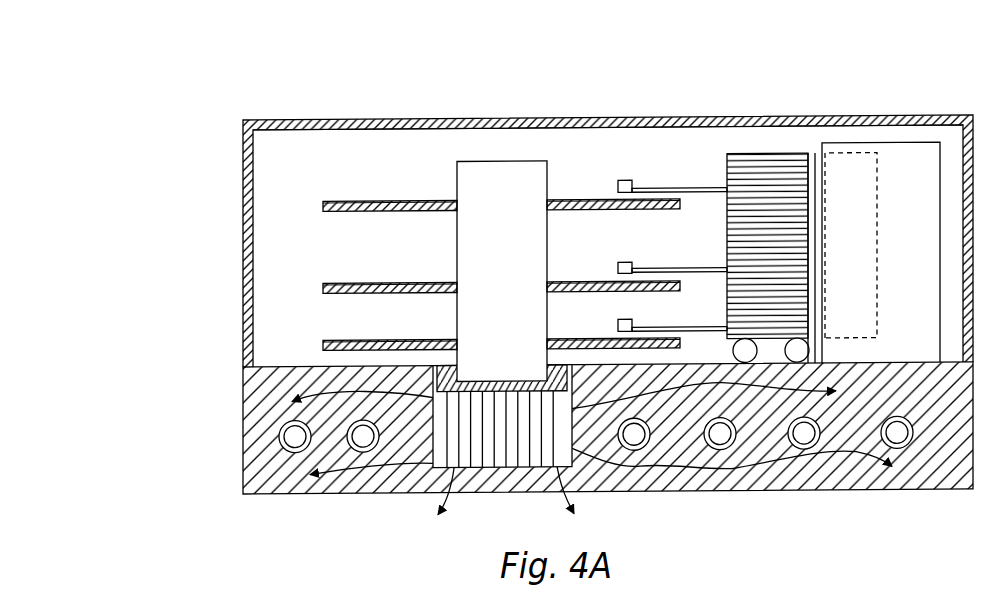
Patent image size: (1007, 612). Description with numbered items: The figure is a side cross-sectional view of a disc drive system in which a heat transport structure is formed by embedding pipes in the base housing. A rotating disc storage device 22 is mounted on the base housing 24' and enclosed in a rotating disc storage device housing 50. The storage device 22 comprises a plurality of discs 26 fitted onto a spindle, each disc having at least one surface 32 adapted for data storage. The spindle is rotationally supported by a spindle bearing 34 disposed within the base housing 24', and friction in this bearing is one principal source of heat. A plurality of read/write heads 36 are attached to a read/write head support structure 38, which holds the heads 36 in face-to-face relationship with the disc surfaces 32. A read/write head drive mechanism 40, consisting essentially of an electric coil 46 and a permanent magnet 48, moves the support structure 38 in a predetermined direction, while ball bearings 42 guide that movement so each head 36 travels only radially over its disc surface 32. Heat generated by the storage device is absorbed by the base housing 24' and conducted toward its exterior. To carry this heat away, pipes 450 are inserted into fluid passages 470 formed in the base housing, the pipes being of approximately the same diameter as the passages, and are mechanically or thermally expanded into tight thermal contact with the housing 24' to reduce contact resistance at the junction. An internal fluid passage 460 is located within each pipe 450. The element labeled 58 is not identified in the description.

The rotating disc storage device 22 is at (309, 182).
The base housing 24' is at (608, 457).
The discs 26 is at (320, 288).
The disc surface 32 is at (368, 202).
The spindle bearing 34 is at (460, 360).
The read/write heads 36 is at (617, 186).
The read/write head support structure 38 is at (694, 330).
The read/write head drive mechanism 40 is at (758, 157).
The ball bearings 42 is at (735, 358).
The electric coil 46 is at (815, 157).
The permanent magnet 48 is at (918, 148).
The rotating disc storage device housing 50 is at (777, 128).
The enclosure housing 58 is at (700, 71).
The pipes 450 is at (633, 455).
The internal fluid passage 460 is at (711, 455).
The base housing fluid passage 470 is at (908, 450).